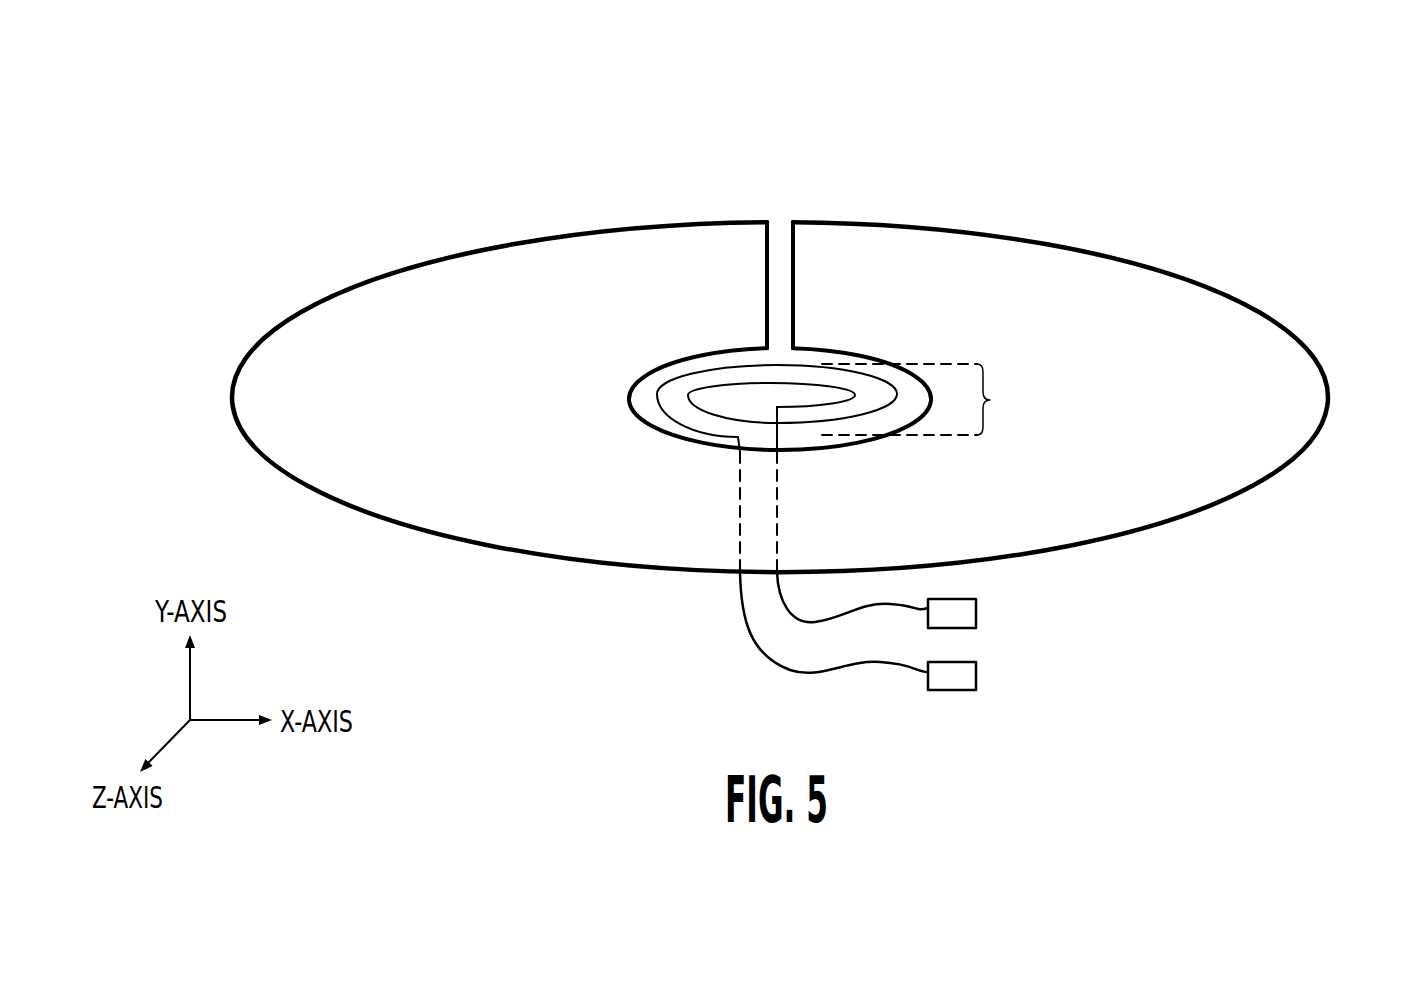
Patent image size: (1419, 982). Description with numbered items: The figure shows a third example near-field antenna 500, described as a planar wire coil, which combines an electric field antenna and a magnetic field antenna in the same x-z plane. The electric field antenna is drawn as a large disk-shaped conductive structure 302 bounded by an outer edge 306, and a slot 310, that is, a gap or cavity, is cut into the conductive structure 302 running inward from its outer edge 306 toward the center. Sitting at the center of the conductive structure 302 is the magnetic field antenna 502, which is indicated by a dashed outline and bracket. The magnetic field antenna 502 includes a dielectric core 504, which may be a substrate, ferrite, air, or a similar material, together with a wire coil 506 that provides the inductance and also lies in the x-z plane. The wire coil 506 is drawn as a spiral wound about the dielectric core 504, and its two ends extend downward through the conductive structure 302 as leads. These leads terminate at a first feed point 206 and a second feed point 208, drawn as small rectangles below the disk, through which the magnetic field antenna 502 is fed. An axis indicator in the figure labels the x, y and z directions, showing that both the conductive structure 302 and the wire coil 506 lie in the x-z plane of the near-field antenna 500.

The third example near-field antenna 500 is at (290, 130).
The conductive structure 302 is at (1235, 345).
The outer edge 306 is at (1313, 353).
The slot 310 is at (782, 212).
The magnetic field antenna 502 is at (990, 400).
The dielectric core 504 is at (803, 388).
The wire coil 506 is at (908, 389).
The first feed point 206 is at (976, 617).
The second feed point 208 is at (976, 672).